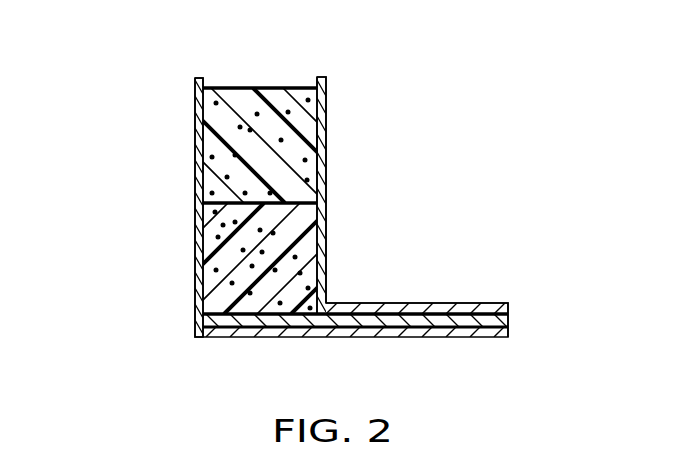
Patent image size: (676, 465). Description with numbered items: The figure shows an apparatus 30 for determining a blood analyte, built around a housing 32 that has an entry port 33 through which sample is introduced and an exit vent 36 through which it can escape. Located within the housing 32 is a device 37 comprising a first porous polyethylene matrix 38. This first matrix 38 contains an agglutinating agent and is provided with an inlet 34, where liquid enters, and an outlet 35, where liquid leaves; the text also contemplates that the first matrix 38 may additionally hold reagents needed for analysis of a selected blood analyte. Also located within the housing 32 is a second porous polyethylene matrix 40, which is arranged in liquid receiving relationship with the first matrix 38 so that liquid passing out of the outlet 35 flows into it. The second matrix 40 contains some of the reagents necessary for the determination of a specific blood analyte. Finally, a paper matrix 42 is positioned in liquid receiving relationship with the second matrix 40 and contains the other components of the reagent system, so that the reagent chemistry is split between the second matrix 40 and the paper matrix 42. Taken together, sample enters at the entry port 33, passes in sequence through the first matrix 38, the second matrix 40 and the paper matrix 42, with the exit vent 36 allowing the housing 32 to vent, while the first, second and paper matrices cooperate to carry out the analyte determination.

The apparatus 30 is at (186, 154).
The housing 32 is at (197, 175).
The entry port 33 is at (225, 80).
The inlet 34 is at (267, 88).
The outlet 35 is at (207, 203).
The exit vent 36 is at (507, 322).
The device 37 is at (340, 116).
The first porous polyethylene matrix 38 is at (316, 152).
The second porous polyethylene matrix 40 is at (317, 232).
The paper matrix 42 is at (426, 318).